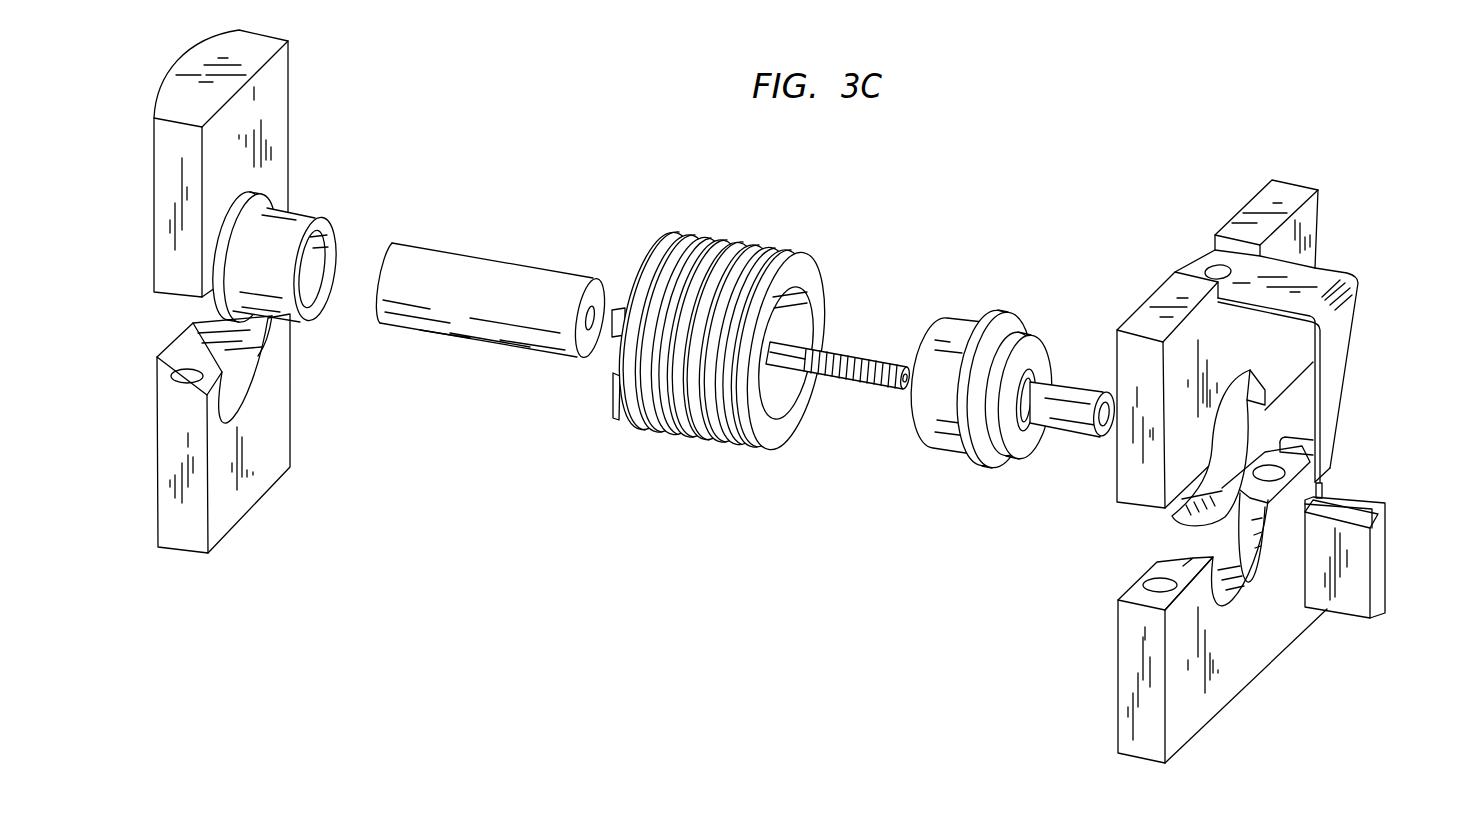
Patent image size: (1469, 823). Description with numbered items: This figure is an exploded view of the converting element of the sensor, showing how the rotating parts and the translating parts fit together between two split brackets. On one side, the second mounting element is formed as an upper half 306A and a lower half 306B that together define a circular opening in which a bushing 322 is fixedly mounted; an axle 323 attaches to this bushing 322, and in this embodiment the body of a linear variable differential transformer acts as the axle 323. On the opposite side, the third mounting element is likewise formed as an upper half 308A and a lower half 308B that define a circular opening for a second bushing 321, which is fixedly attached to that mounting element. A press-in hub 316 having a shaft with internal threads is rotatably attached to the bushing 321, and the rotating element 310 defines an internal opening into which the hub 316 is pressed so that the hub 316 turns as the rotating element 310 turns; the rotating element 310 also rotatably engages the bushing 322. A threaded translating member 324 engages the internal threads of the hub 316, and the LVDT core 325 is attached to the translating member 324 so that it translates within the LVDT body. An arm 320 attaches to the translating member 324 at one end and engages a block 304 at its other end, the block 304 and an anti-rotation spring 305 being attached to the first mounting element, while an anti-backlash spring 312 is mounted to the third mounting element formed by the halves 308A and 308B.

The upper half of second mounting element 306A is at (278, 100).
The lower half of second mounting element 306B is at (283, 435).
The bushing 322 is at (310, 213).
The axle 323 is at (497, 262).
The LVDT core 325 is at (613, 309).
The rotating element 310 is at (735, 245).
The translating member 324 is at (868, 353).
The press-in hub 316 is at (968, 318).
The upper half of third mounting element 308A is at (1317, 237).
The lower half of third mounting element 308B is at (1218, 692).
The anti-backlash spring 312 is at (1338, 360).
The arm 320 is at (1323, 485).
The bushing 321 is at (1172, 512).
The block 304 is at (1387, 534).
The anti-rotation spring 305 is at (1340, 603).